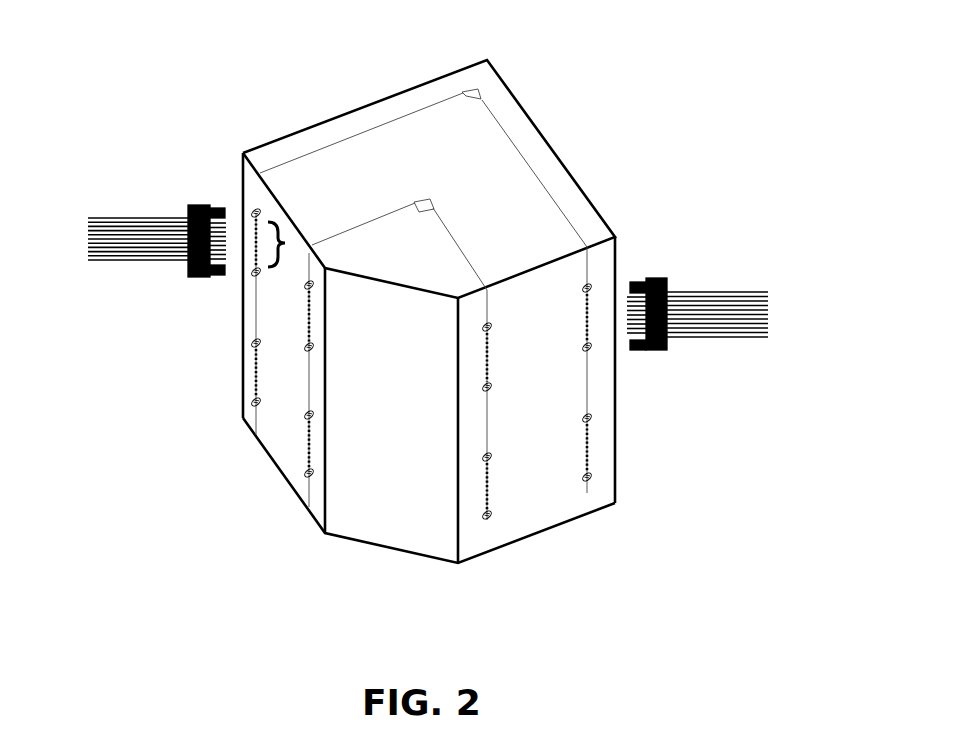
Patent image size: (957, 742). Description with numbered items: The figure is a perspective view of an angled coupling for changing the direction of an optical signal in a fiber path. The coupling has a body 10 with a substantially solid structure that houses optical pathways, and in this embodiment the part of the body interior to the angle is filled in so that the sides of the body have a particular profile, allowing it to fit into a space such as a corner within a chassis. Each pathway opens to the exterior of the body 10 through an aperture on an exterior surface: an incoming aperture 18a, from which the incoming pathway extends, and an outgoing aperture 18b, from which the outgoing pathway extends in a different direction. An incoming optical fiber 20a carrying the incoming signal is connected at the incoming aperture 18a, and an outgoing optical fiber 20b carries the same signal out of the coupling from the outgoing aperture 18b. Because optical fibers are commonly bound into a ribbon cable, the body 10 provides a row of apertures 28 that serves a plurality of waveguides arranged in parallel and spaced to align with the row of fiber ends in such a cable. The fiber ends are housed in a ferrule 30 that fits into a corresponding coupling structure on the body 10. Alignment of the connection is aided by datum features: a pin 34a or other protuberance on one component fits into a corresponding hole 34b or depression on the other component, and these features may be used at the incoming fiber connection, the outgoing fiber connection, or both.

The body 10 is at (594, 95).
The incoming aperture 18a is at (262, 230).
The outgoing aperture 18b is at (585, 305).
The incoming optical fiber 20a is at (91, 260).
The outgoing optical fiber 20b is at (762, 296).
The row of apertures 28 is at (285, 243).
The ferrule 30 is at (195, 206).
The pin 34a is at (220, 276).
The hole 34b is at (255, 275).